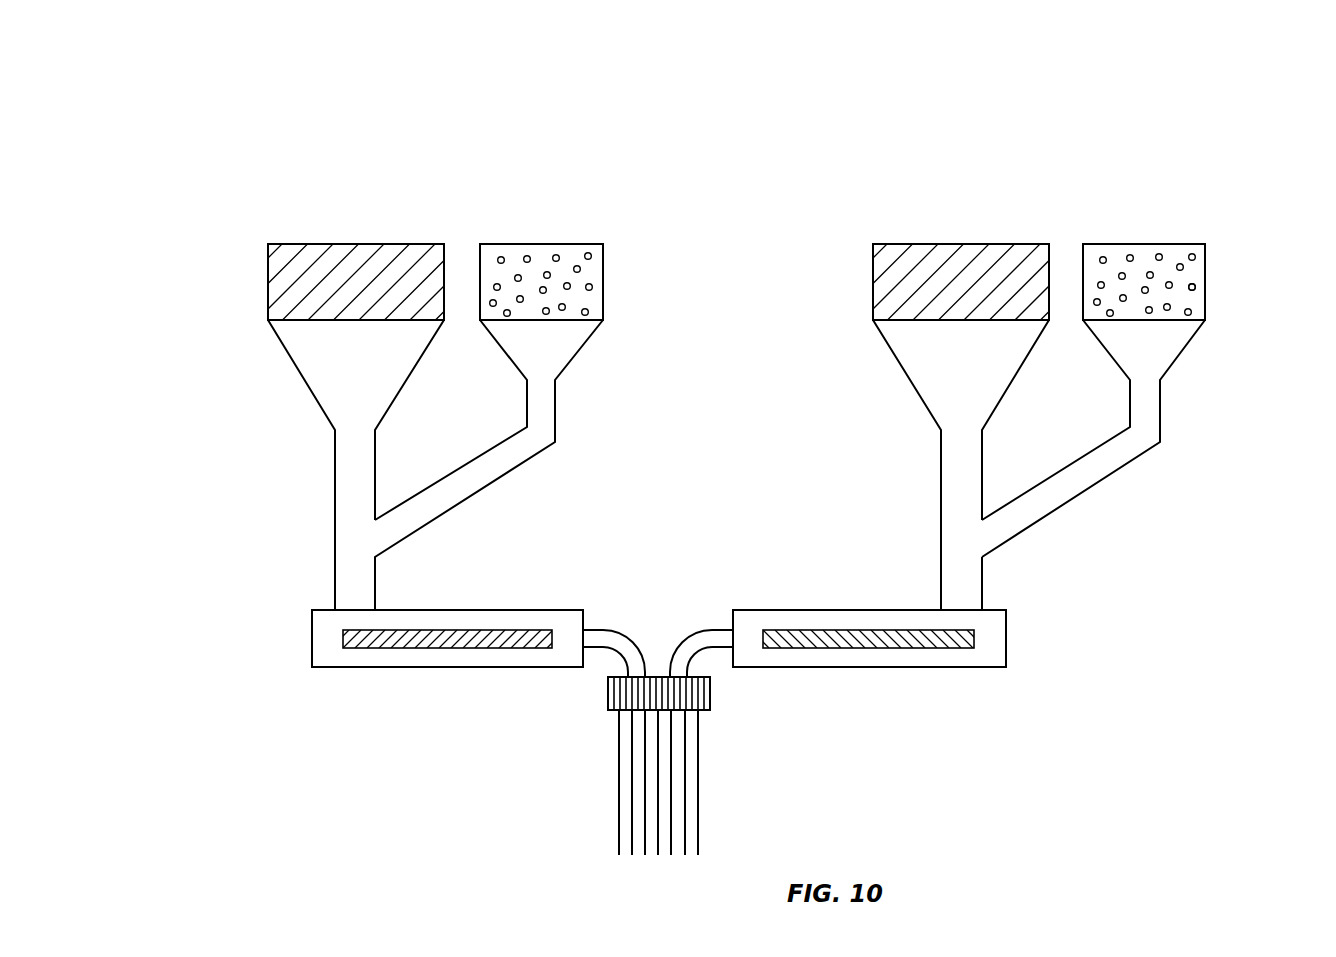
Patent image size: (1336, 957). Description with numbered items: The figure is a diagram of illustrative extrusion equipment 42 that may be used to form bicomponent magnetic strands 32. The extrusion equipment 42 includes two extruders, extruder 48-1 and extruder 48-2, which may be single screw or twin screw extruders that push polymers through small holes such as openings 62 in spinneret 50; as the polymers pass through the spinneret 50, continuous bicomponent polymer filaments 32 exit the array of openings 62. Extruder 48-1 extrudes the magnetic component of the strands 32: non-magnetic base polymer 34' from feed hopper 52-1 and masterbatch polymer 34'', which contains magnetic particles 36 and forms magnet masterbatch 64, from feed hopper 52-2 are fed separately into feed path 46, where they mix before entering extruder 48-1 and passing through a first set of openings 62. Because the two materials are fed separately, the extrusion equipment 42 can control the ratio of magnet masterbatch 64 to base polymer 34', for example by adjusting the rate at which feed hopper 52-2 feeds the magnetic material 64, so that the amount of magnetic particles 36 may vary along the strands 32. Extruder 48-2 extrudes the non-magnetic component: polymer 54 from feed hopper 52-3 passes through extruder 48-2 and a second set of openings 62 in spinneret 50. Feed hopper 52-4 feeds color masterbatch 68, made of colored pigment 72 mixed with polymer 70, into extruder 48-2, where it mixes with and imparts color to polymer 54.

The extrusion equipment 42 is at (888, 84).
The base polymer 34' is at (359, 262).
The masterbatch polymer 34'' is at (541, 262).
The magnetic particles 36 is at (594, 258).
The magnet masterbatch 64 is at (605, 295).
The polymer 54 is at (968, 253).
The pigment 72 is at (1151, 271).
The color masterbatch 68 is at (1208, 262).
The polymer 70 is at (1196, 290).
The feed hopper 52-1 is at (255, 338).
The feed hopper 52-2 is at (619, 341).
The feed hopper 52-3 is at (1043, 361).
The feed hopper 52-4 is at (1222, 341).
The feed path 46 is at (368, 580).
The extruder 48-1 is at (380, 648).
The extruder 48-2 is at (878, 648).
The spinneret 50 is at (664, 701).
The openings 62 is at (638, 700).
The bicomponent magnetic strands 32 is at (722, 710).